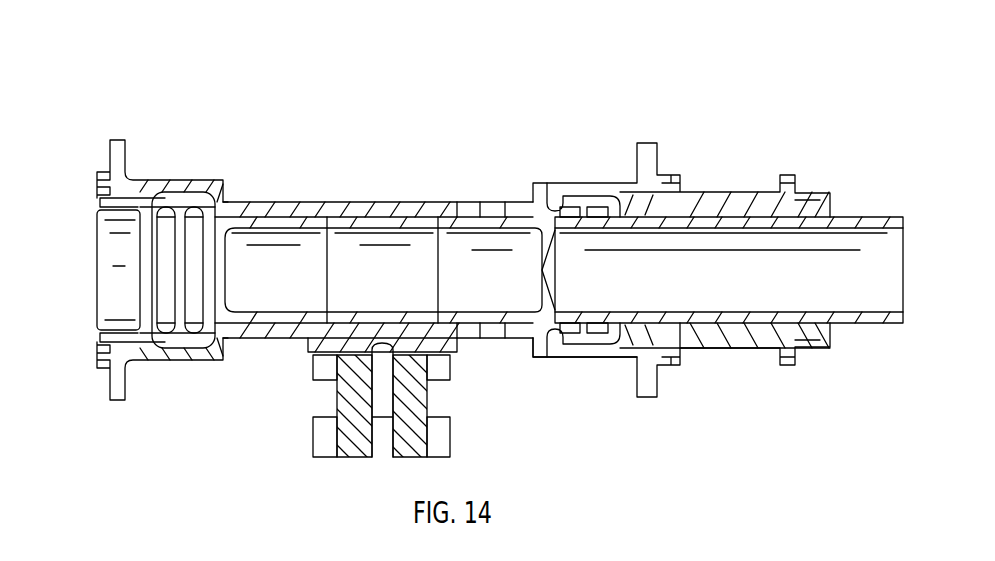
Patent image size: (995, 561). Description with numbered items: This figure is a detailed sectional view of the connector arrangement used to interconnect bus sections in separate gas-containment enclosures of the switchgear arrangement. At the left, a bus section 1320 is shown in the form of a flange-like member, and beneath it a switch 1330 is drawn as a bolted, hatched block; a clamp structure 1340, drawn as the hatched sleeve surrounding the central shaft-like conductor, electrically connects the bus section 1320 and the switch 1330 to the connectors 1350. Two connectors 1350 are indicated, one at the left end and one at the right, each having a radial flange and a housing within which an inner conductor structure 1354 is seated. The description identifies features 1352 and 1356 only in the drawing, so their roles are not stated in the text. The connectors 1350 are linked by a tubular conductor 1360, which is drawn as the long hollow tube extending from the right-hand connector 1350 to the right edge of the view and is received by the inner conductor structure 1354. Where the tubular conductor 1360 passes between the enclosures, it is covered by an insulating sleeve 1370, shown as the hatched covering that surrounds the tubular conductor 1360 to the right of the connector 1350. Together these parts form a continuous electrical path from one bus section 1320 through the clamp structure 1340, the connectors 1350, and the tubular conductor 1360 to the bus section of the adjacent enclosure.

The bus section 1320 is at (355, 298).
The switch 1330 is at (357, 435).
The clamp structure 1340 is at (333, 212).
The connector 1350 is at (200, 120).
The bearing 1352 is at (170, 212).
The inner conductor structure 1354 is at (578, 207).
The housing 1356 is at (558, 355).
The tubular conductor 1360 is at (870, 305).
The insulating sleeve 1370 is at (733, 342).